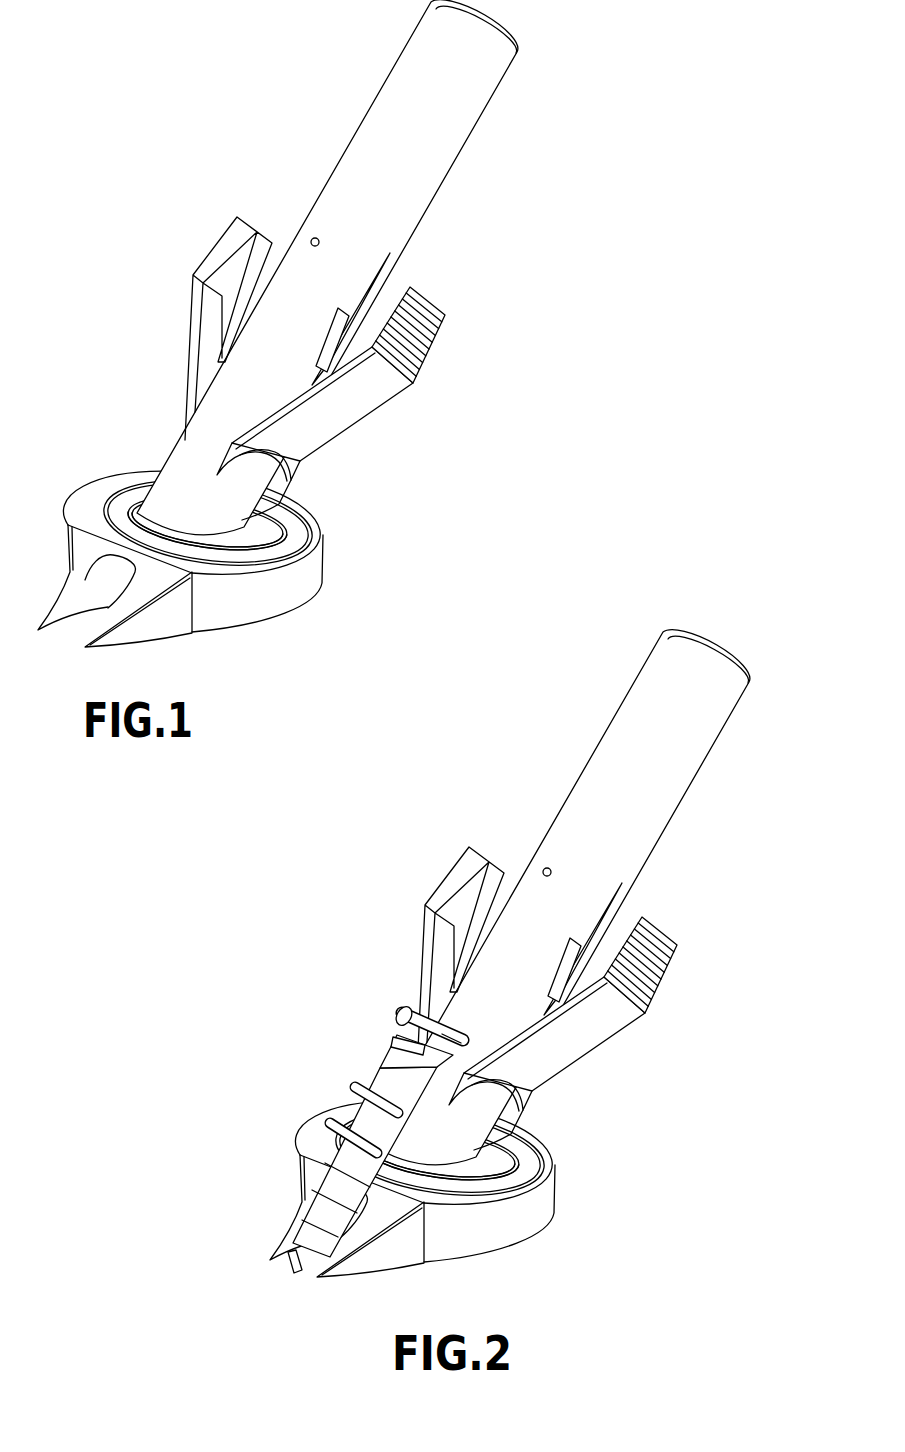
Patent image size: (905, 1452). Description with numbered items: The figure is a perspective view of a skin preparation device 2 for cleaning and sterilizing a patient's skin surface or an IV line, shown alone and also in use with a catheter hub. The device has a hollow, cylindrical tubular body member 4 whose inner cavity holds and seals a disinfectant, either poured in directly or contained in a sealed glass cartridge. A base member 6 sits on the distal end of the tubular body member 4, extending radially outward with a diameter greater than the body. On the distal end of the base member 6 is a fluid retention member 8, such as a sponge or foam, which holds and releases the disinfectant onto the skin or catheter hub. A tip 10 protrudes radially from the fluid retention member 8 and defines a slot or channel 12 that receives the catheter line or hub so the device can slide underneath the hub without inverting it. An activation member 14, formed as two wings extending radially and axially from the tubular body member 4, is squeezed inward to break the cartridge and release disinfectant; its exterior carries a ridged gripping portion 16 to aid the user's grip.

In FIG. 1, the skin preparation device 2 is at (270, 340).
In FIG. 2, the skin preparation device 2 is at (510, 973).
In FIG. 1, the tubular body member 4 is at (378, 95).
In FIG. 2, the tubular body member 4 is at (559, 897).
In FIG. 1, the base member 6 is at (122, 508).
In FIG. 2, the base member 6 is at (439, 1186).
In FIG. 1, the fluid retention member 8 is at (287, 540).
In FIG. 2, the fluid retention member 8 is at (439, 1154).
In FIG. 1, the tip 10 is at (158, 623).
In FIG. 2, the tip 10 is at (427, 1231).
In FIG. 1, the slot or channel 12 is at (87, 580).
In FIG. 2, the slot or channel 12 is at (347, 1236).
In FIG. 1, the activation member 14 is at (387, 390).
In FIG. 2, the activation member 14 is at (548, 1063).
In FIG. 1, the gripping portion 16 is at (437, 342).
In FIG. 2, the gripping portion 16 is at (661, 965).